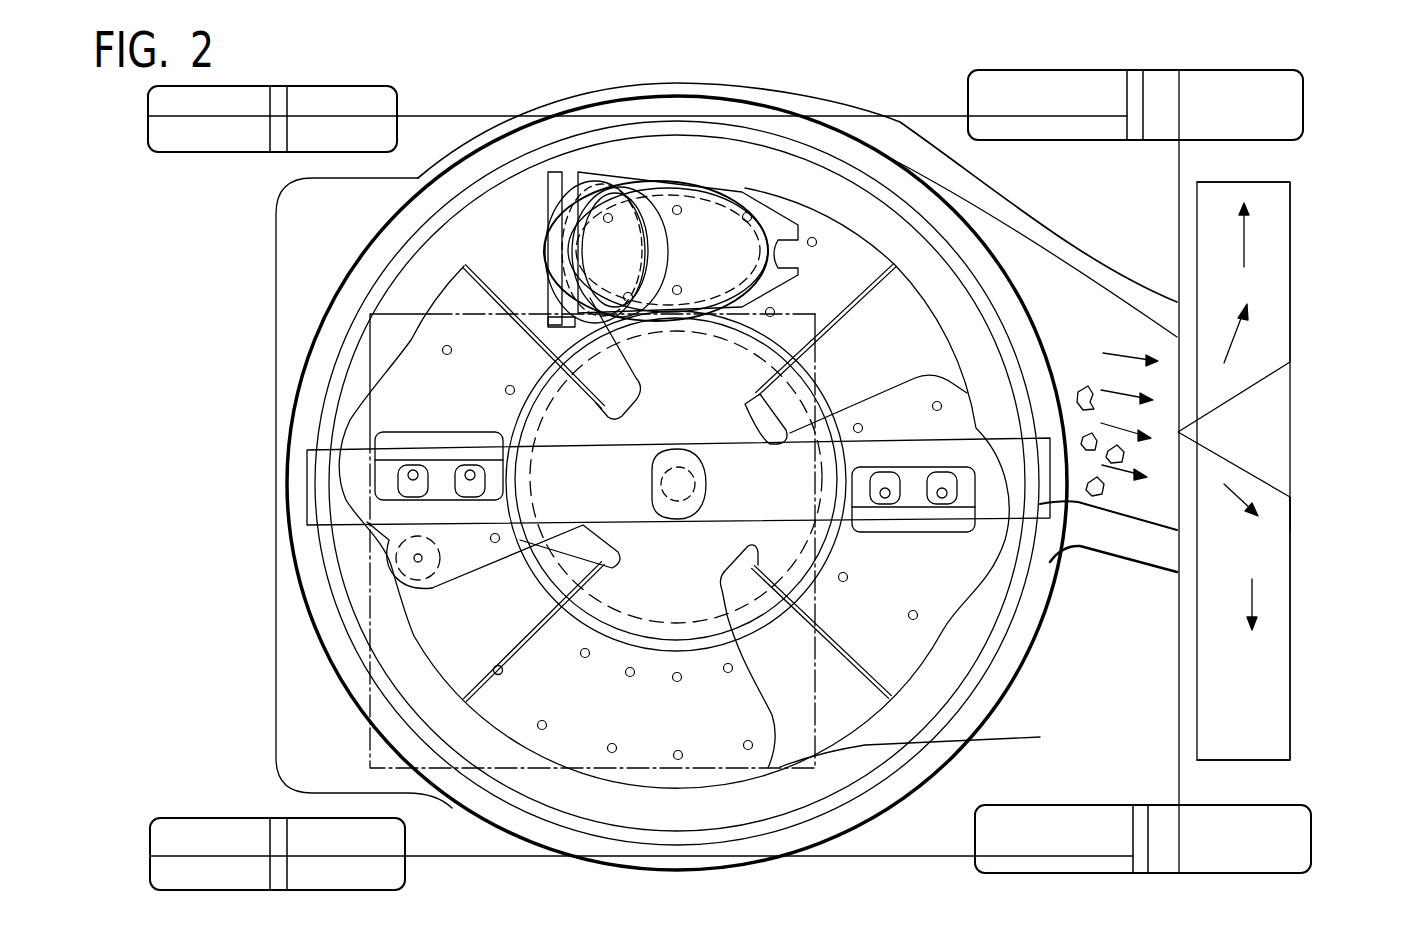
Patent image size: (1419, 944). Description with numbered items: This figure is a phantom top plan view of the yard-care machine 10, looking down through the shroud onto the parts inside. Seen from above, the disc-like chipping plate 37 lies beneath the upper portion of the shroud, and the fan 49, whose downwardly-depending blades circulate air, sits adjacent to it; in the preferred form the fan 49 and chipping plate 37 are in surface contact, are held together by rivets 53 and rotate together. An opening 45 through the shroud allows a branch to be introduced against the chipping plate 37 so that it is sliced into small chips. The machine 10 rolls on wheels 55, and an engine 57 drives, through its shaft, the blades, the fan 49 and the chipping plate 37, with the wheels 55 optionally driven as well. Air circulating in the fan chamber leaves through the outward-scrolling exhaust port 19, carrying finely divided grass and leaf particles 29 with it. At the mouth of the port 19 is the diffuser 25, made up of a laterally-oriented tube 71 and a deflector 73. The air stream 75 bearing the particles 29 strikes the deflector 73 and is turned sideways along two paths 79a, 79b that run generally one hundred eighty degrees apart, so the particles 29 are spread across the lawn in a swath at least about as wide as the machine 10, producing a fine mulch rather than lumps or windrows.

The yard-care machine 10 is at (541, 52).
The wheels 55 is at (306, 86).
The opening 45 is at (705, 220).
The air stream 75 is at (1103, 382).
The exhaust port 19 is at (1103, 332).
The path 79a is at (1273, 271).
The diffuser 25 is at (1273, 404).
The deflector 73 is at (1254, 471).
The tube 71 is at (1292, 527).
The path 79b is at (1273, 613).
The particles 29 is at (1094, 495).
The chipping plate 37 is at (367, 522).
The fan 49 is at (466, 698).
The rivets 53 is at (613, 744).
The engine 57 is at (975, 742).